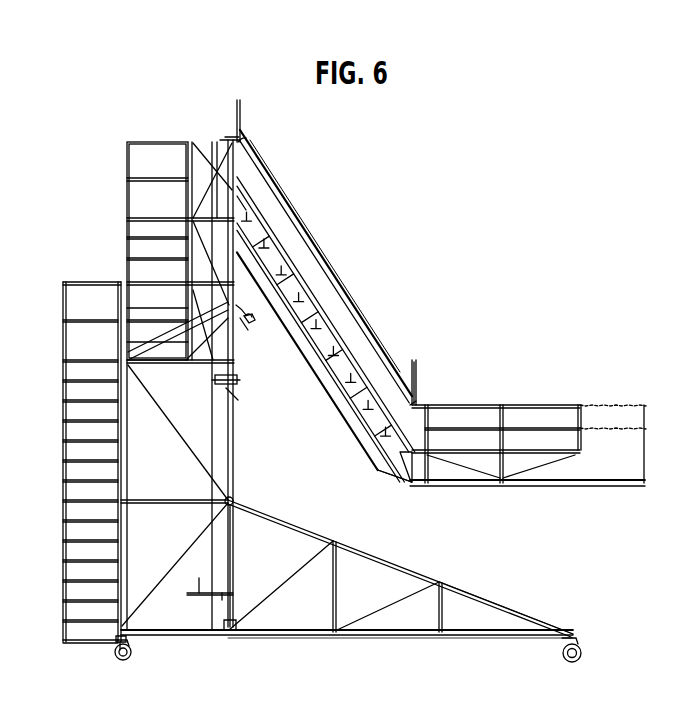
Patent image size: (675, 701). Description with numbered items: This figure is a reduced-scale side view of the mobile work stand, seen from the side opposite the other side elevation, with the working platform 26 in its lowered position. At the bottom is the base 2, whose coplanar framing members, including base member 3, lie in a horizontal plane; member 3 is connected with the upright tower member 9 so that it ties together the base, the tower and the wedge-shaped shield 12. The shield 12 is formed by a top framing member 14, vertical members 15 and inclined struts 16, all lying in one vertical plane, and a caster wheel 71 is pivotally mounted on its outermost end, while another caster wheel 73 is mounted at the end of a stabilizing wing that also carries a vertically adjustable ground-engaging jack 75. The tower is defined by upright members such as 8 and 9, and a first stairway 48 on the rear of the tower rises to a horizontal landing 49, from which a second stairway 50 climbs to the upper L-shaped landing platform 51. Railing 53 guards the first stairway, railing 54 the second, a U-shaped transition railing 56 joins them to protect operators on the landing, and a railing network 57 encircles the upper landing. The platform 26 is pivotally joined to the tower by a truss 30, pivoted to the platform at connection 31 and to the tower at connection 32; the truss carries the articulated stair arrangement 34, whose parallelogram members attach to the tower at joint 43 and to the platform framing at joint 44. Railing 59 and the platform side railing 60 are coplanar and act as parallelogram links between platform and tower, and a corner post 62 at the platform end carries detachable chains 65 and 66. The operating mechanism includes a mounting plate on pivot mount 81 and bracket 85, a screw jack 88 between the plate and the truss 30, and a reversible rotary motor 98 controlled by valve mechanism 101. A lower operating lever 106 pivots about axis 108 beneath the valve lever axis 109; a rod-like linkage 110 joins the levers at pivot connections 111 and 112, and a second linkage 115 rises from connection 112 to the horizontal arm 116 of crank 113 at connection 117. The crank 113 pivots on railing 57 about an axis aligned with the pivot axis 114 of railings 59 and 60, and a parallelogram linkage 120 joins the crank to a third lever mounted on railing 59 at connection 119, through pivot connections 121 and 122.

The base 2 is at (330, 638).
The framing member 3 is at (428, 638).
The upright vertical member 8 is at (120, 533).
The upright vertical member 9 is at (232, 534).
The shield 12 is at (413, 568).
The top framing member 14 is at (477, 598).
The vertical members 15 is at (336, 578).
The inclined struts 16 is at (274, 590).
The working platform 26 is at (552, 486).
The truss 30 is at (362, 440).
The pivot connection 31 is at (412, 484).
The pivot connection 32 is at (244, 219).
The articulated stair arrangement 34 is at (356, 352).
The pivot joint 43 is at (237, 195).
The pivot joint 44 is at (412, 450).
The first stairway 48 is at (113, 444).
The landing 49 is at (162, 356).
The second stairway 50 is at (137, 262).
The upper landing platform 51 is at (136, 216).
The railing 53 is at (119, 472).
The railing 54 is at (65, 422).
The transition railing 56 is at (98, 282).
The railing network 57 is at (185, 142).
The railing 59 is at (358, 274).
The railing 60 is at (508, 404).
The corner post 62 is at (645, 466).
The detachable chain 65 is at (626, 404).
The detachable chain 66 is at (635, 430).
The caster wheel 71 is at (580, 652).
The caster wheel 73 is at (132, 650).
The jack 75 is at (116, 646).
The pivot mount 81 is at (245, 308).
The bracket 85 is at (240, 333).
The screw jack 88 is at (190, 358).
The rotary motor 98 is at (250, 320).
The valve mechanism 101 is at (236, 376).
The operating lever 106 is at (220, 598).
The pivot axis 108 is at (232, 594).
The pivot axis 109 is at (238, 382).
The rod-like linkage 110 is at (230, 440).
The pivot connection 111 is at (199, 581).
The pivot connection 112 is at (234, 394).
The crank 113 is at (234, 132).
The pivot axis 114 is at (246, 144).
The rod-like linkage 115 is at (214, 306).
The crank arm 116 is at (240, 109).
The pivot connection 117 is at (214, 144).
The pivot connection 119 is at (414, 404).
The parallelogram linkage 120 is at (376, 306).
The pivot connection 121 is at (416, 370).
The pivot connection 122 is at (237, 108).